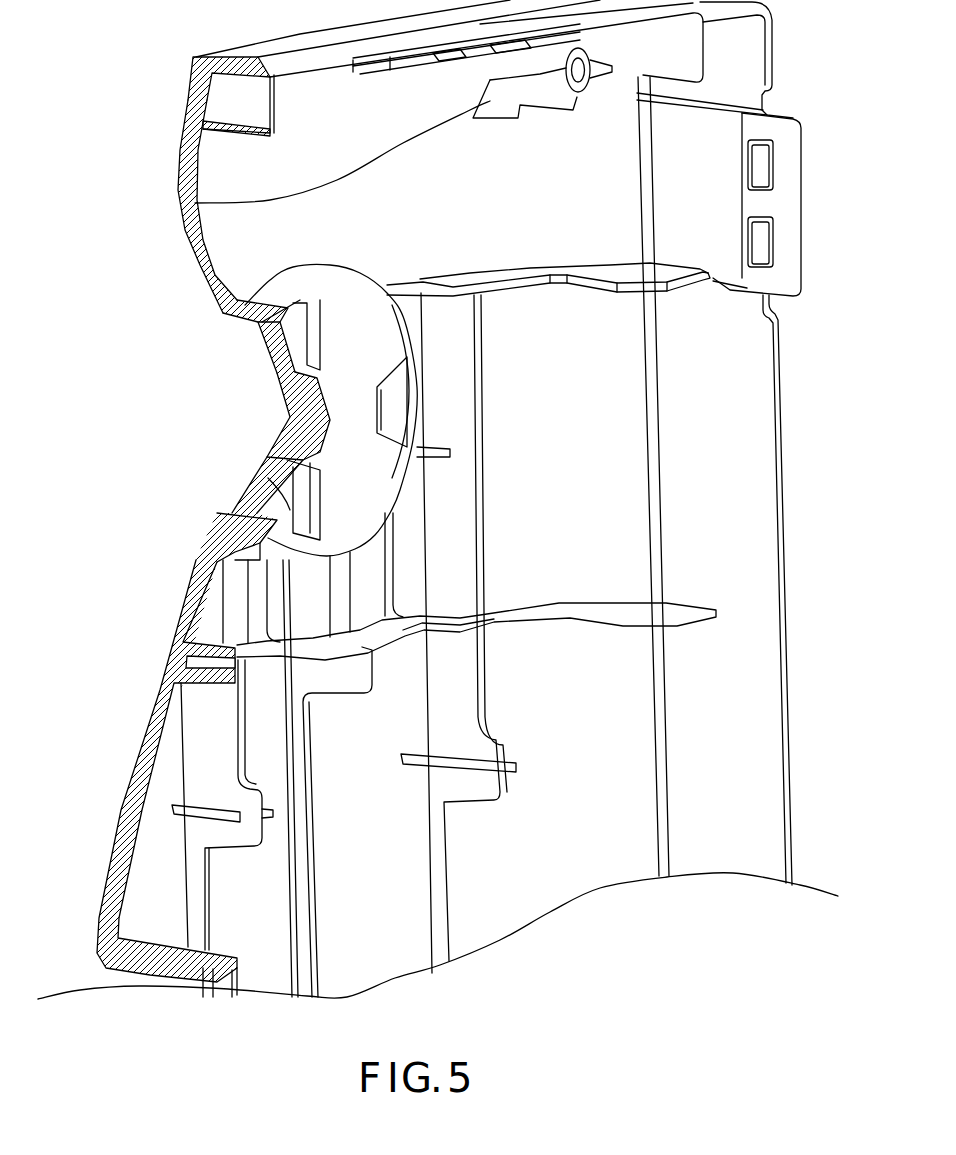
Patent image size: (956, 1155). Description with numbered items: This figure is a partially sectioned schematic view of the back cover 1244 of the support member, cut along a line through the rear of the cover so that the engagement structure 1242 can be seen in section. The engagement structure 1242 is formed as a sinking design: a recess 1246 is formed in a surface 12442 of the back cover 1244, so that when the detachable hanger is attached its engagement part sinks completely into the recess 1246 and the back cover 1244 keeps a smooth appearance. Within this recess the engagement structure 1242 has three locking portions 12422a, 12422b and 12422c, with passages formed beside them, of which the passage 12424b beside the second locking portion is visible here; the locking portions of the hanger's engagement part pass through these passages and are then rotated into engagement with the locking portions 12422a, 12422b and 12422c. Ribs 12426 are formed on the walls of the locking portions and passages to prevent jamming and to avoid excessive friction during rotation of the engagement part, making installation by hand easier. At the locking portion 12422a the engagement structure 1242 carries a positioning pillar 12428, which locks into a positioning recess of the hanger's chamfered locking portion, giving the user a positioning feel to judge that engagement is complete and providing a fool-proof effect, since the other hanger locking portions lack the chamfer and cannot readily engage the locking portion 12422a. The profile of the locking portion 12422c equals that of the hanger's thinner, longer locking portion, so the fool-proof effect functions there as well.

The engagement structure 1242 is at (430, 381).
The back cover 1244 is at (187, 150).
The recess 1246 is at (233, 303).
The surface 12442 is at (195, 247).
The locking portion 12422a is at (262, 490).
The locking portion 12422b is at (290, 366).
The locking portion 12422c is at (397, 420).
The passage 12424b is at (302, 334).
The ribs 12426 is at (283, 346).
The positioning pillar 12428 is at (225, 543).